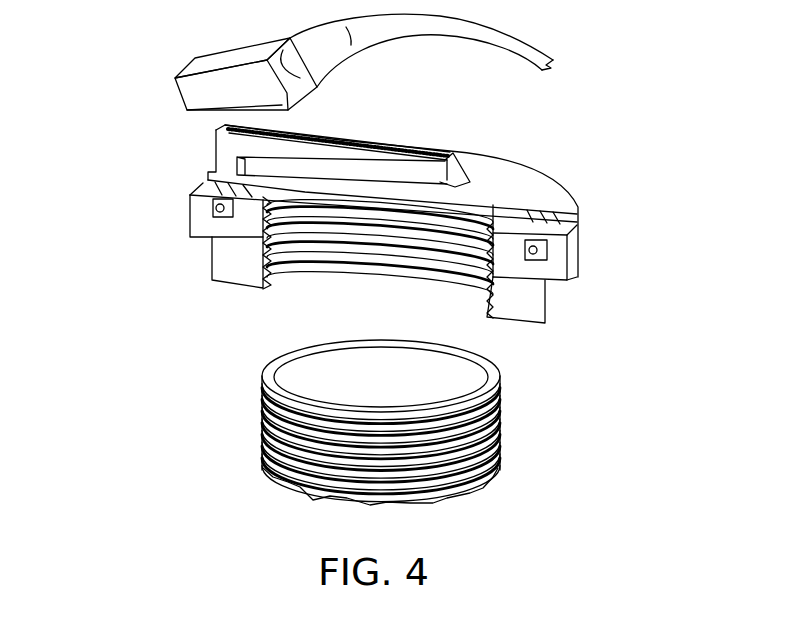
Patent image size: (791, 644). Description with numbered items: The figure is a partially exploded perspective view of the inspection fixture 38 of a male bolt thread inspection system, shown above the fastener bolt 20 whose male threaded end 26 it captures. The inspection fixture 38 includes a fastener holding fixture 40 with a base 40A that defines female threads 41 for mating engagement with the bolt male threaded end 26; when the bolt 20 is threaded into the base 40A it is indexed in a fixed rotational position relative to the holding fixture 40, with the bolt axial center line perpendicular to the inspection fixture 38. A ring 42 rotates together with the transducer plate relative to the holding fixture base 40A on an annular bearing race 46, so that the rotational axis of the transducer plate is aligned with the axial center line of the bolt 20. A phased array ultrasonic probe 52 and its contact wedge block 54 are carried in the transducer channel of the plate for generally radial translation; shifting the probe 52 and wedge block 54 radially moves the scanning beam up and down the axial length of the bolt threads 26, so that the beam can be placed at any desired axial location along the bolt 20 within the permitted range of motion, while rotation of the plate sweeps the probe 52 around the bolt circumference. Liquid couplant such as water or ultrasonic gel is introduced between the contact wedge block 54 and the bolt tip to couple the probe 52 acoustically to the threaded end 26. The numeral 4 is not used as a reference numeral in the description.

The cover plate 4 is at (547, 187).
The fastener bolt 20 is at (343, 422).
The male threaded end 26 is at (497, 445).
The inspection fixture 38 is at (433, 207).
The fastener holding fixture 40 is at (513, 308).
The base 40A is at (187, 254).
The female threads 41 is at (478, 233).
The ring 42 is at (577, 238).
The annular bearing race 46 is at (220, 208).
The phased array ultrasonic probe 52 is at (210, 63).
The contact wedge block 54 is at (307, 90).